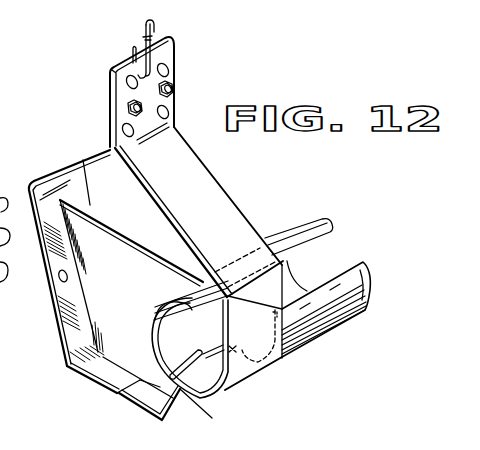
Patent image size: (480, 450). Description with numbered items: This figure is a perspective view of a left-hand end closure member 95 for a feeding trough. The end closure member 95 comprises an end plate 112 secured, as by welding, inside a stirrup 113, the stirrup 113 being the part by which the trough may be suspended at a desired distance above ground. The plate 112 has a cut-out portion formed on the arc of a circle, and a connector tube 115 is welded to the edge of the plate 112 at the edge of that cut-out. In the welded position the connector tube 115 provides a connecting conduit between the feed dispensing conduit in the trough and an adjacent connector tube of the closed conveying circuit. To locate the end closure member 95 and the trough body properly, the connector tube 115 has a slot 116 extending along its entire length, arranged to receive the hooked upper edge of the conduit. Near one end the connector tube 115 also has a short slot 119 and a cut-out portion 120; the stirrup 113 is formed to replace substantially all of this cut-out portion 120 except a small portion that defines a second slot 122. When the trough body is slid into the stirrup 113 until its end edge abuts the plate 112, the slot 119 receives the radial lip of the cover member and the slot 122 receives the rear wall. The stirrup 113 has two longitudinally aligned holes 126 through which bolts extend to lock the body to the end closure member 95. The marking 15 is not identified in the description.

The left-hand end closure member 95 is at (244, 203).
The stirrup 113 is at (206, 195).
The end plate 112 is at (148, 290).
The holes 126 is at (60, 283).
The short slot 119 is at (186, 357).
The second slot 122 is at (195, 369).
The slot 116 is at (325, 257).
The connector tube 115 is at (356, 276).
The cut-out portion 120 is at (236, 356).
The rail 15 is at (113, 427).